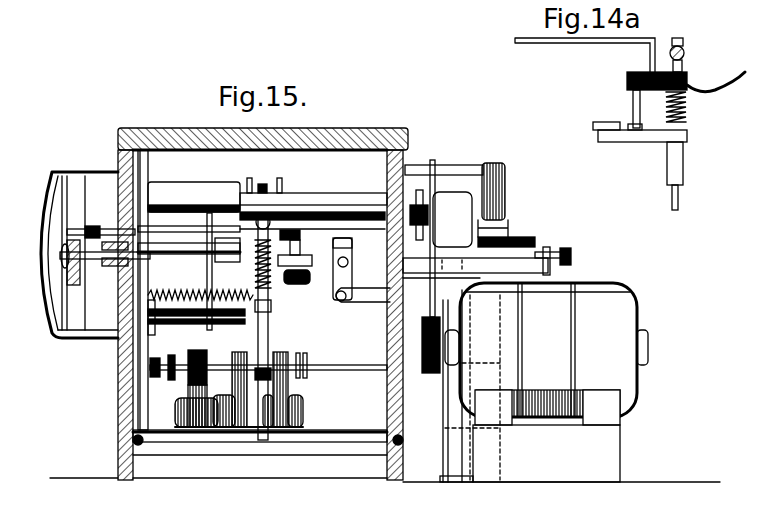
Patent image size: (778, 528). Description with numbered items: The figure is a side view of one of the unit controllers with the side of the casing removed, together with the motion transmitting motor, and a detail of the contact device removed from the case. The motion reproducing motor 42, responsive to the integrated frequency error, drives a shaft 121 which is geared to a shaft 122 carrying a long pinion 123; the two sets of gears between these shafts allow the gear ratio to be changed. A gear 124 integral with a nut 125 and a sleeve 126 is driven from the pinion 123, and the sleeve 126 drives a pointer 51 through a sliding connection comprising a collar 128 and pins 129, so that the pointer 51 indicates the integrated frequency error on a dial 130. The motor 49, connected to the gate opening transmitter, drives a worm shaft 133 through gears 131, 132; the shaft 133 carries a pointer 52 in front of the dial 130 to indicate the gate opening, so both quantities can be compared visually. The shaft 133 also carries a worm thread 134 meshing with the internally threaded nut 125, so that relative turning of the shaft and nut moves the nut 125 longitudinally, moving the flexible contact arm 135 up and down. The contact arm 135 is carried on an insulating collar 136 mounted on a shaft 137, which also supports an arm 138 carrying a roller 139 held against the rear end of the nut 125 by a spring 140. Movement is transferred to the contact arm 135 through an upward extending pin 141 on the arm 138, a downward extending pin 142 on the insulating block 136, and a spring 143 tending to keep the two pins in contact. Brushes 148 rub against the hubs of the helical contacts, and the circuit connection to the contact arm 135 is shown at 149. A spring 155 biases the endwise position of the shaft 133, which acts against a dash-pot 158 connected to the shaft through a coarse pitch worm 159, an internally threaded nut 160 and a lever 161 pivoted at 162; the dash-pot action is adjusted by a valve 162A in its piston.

In FIG. 15, the motion reproducing motor 42 is at (178, 403).
In FIG. 15, the motor 49 is at (638, 400).
In FIG. 15, the pointer 51 is at (78, 196).
In FIG. 15, the pointer 52 is at (58, 212).
In FIG. 15, the shaft 121 is at (330, 366).
In FIG. 15, the shaft 122 is at (148, 325).
In FIG. 15, the long pinion 123 is at (207, 325).
In FIG. 15, the gear 124 is at (206, 230).
In FIG. 15, the nut 125 is at (224, 271).
In FIG. 15, the sleeve 126 is at (189, 251).
In FIG. 15, the collar 128 is at (104, 268).
In FIG. 15, the pins 129 is at (93, 228).
In FIG. 15, the dial 130 is at (60, 321).
In FIG. 15, the gear 131 is at (430, 374).
In FIG. 15, the gear 132 is at (420, 282).
In FIG. 15, the worm shaft 133 is at (306, 278).
In FIG. 15, the worm thread 134 is at (300, 247).
In FIG. 14A, the flexible contact arm 135 is at (548, 43).
In FIG. 15, the insulating collar 136 is at (300, 235).
In FIG. 14A, the insulating collar 136 is at (687, 76).
In FIG. 15, the shaft 137 is at (301, 388).
In FIG. 14A, the shaft 137 is at (679, 38).
In FIG. 15, the arm 138 is at (268, 290).
In FIG. 14A, the arm 138 is at (657, 141).
In FIG. 15, the roller 139 is at (272, 285).
In FIG. 14A, the roller 139 is at (593, 126).
In FIG. 15, the spring 140 is at (200, 289).
In FIG. 14A, the upward extending pin 141 is at (633, 132).
In FIG. 14A, the downward extending pin 142 is at (630, 100).
In FIG. 14A, the spring 143 is at (688, 114).
In FIG. 15, the brushes 148 is at (219, 205).
In FIG. 14A, the circuit connection 149 is at (735, 88).
In FIG. 15, the spring 155 is at (520, 237).
In FIG. 15, the dash-pot 158 is at (445, 478).
In FIG. 15, the coarse pitch worm 159 is at (352, 262).
In FIG. 15, the internally threaded nut 160 is at (348, 234).
In FIG. 15, the lever 161 is at (356, 303).
In FIG. 15, the pivot 162 is at (336, 300).
In FIG. 15, the valve 162A is at (462, 432).